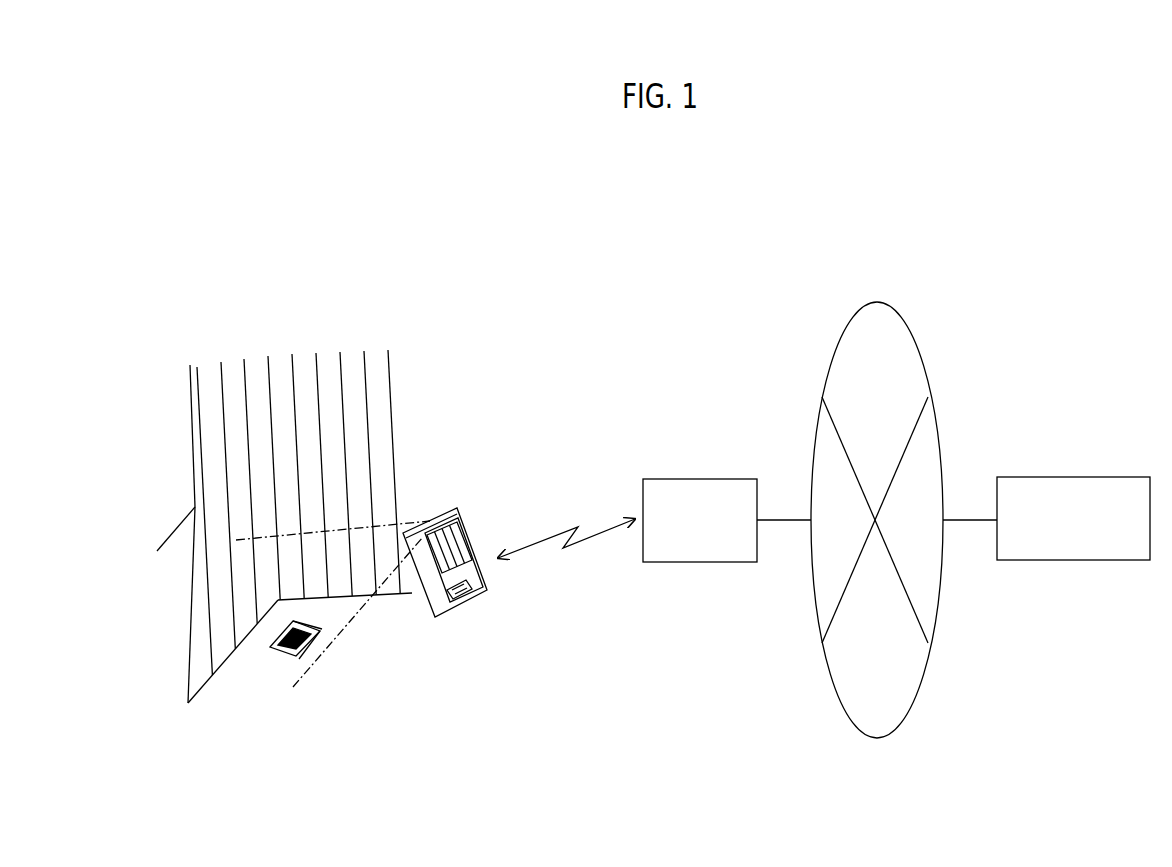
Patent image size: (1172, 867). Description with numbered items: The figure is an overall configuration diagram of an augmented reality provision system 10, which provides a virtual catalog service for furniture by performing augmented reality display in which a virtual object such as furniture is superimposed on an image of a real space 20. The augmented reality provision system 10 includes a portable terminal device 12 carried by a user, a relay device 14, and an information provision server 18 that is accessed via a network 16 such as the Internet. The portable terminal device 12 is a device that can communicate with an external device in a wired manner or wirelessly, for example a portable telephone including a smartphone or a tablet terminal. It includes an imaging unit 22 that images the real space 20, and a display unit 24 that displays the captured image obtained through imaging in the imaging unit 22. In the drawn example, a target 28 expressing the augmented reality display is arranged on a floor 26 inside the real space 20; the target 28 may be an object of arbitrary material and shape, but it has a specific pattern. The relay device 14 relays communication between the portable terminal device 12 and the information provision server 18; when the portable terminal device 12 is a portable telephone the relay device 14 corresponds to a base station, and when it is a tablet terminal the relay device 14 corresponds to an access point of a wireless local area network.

The augmented reality provision system 10 is at (403, 271).
The portable terminal device 12 is at (465, 536).
The relay device 14 is at (697, 479).
The network 16 is at (903, 318).
The information provision server 18 is at (1072, 477).
The real space 20 is at (329, 358).
The imaging unit 22 is at (430, 522).
The display unit 24 is at (462, 534).
The floor 26 is at (343, 665).
The target 28 is at (285, 654).